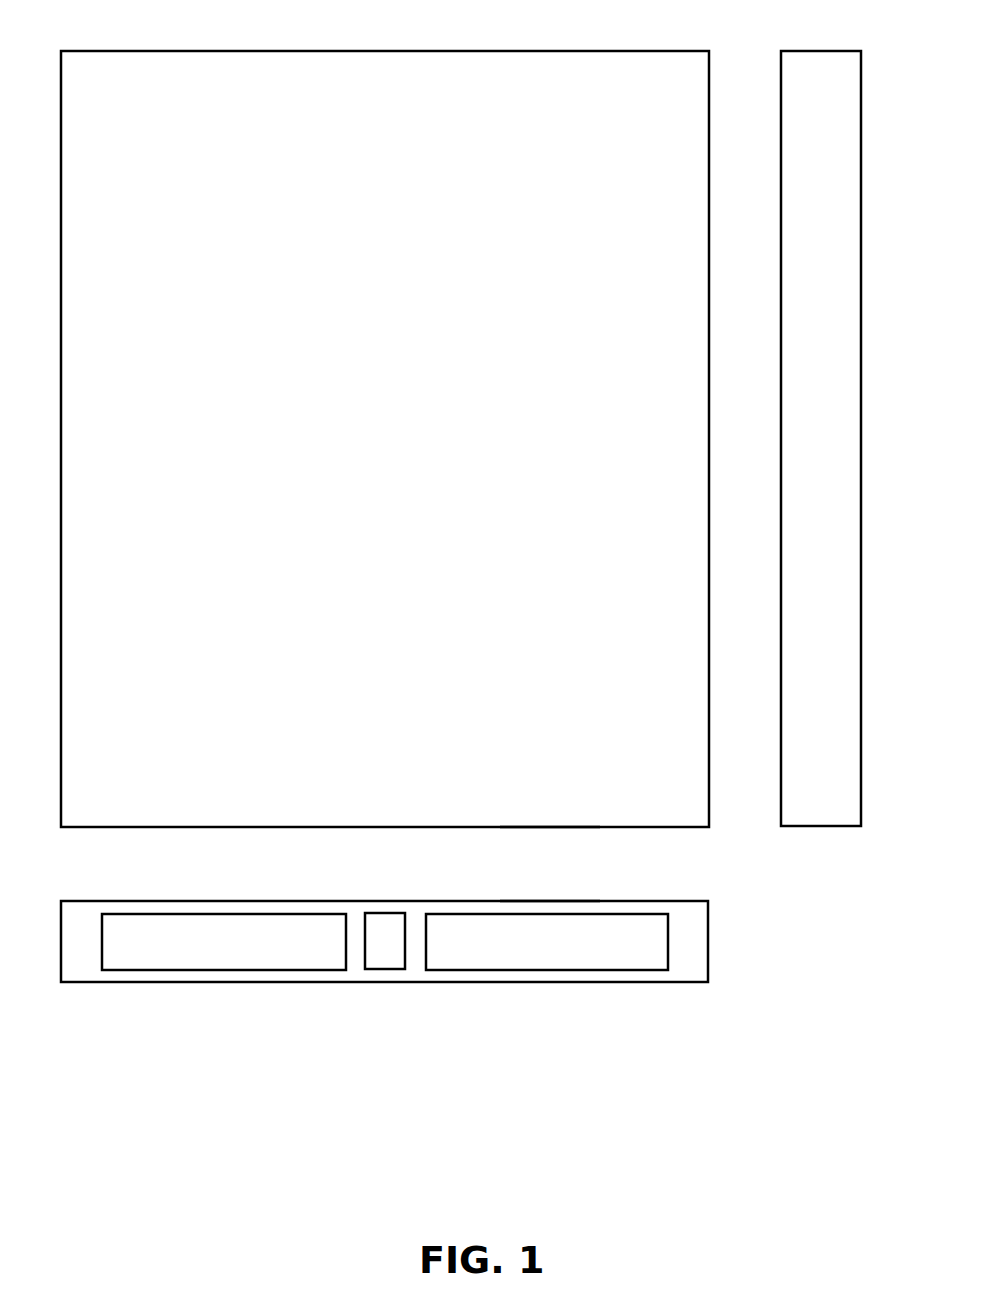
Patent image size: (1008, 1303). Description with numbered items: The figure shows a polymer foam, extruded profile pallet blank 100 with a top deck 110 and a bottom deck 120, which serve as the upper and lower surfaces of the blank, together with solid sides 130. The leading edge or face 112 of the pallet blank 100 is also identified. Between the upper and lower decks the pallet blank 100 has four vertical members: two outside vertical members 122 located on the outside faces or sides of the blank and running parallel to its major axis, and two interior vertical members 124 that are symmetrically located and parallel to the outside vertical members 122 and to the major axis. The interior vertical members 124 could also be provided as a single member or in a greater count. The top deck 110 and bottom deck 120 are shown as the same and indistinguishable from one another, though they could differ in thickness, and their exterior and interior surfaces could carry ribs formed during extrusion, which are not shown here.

The pallet blank 100 is at (462, 524).
The top surface or deck 110 is at (448, 83).
The leading edge or face 112 is at (517, 864).
The bottom surface or deck 120 is at (458, 988).
The outside vertical members 122 is at (693, 917).
The interior vertical members 124 is at (359, 921).
The solid sides 130 is at (822, 413).